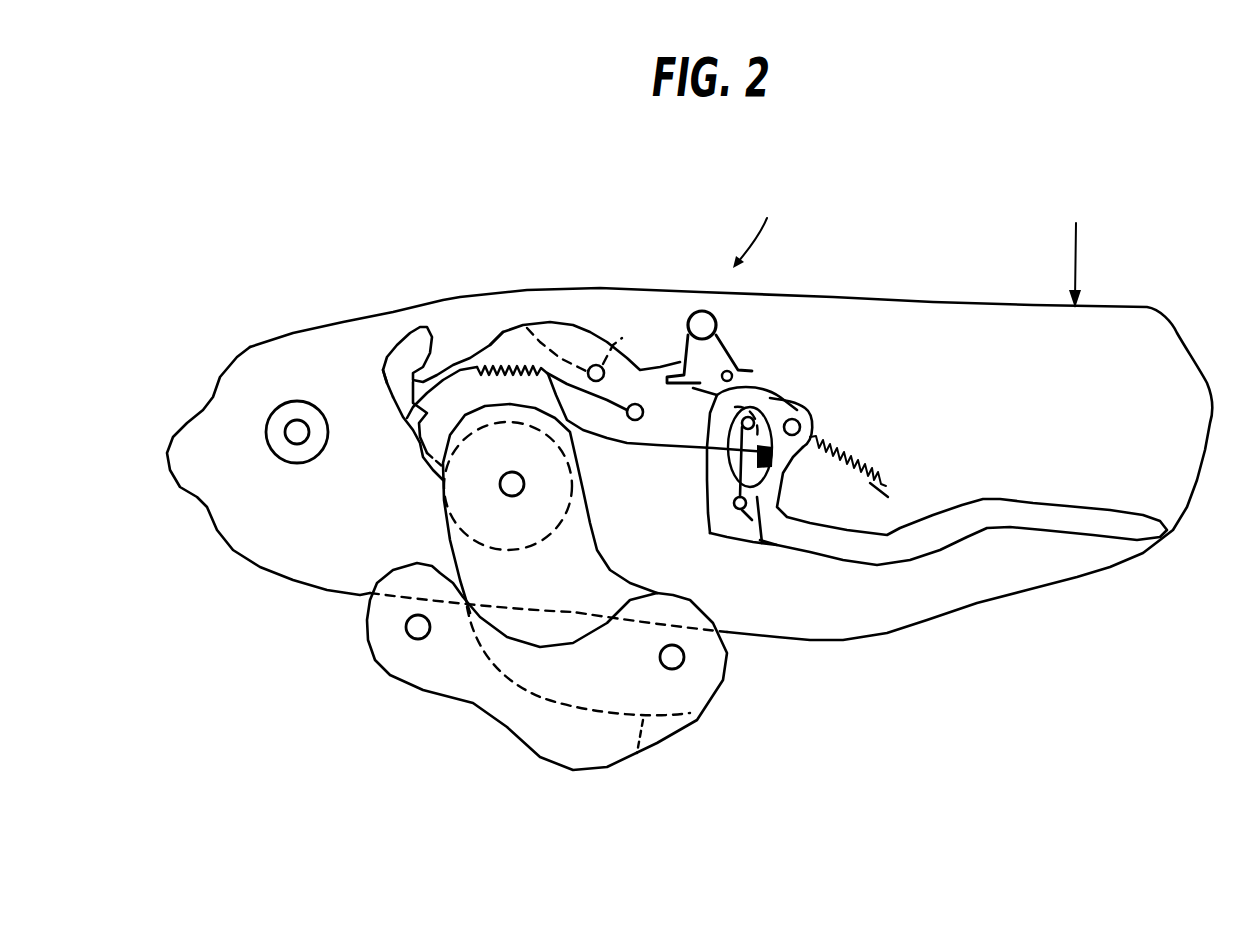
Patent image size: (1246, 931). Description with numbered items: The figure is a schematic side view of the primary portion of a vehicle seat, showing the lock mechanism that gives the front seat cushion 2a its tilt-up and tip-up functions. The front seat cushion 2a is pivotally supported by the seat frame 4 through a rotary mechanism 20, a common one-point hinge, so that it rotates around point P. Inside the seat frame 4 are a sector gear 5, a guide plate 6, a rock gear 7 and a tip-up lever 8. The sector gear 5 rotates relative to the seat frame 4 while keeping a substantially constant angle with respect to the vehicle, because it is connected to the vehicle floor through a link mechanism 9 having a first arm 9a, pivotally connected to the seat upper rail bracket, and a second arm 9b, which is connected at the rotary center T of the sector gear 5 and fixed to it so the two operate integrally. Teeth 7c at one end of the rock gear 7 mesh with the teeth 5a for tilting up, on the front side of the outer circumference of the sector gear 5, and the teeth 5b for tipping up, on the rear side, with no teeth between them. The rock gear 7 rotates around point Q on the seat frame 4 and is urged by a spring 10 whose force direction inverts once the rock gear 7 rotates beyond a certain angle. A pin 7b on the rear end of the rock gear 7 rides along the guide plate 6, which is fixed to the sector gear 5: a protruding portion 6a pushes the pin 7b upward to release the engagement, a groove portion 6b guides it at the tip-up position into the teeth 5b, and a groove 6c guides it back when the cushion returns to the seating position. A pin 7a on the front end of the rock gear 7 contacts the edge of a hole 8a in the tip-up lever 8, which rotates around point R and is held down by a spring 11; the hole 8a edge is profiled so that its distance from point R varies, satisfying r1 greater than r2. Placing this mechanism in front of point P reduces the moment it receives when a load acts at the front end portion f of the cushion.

The front seat cushion 2a is at (758, 232).
The seat frame 4 is at (823, 297).
The sector gear 5 is at (423, 470).
The teeth for tilting up 5a is at (507, 370).
The teeth for tipping up 5b is at (407, 418).
The guide plate 6 is at (462, 367).
The protruding portion 6a is at (527, 328).
The groove portion 6b is at (427, 323).
The groove 6c is at (599, 362).
The rock gear 7 is at (657, 445).
The pin 7a is at (760, 404).
The pin 7b is at (582, 360).
The teeth 7c is at (503, 330).
The tip-up lever 8 is at (1113, 512).
The hole 8a is at (793, 418).
The link mechanism 9 is at (588, 768).
The first arm 9a is at (523, 740).
The second arm 9b is at (637, 753).
The spring 10 is at (700, 310).
The spring 11 is at (840, 445).
The rotary mechanism 20 is at (293, 400).
The point P is at (288, 430).
The point Q is at (637, 423).
The point R is at (737, 513).
The rotary center T is at (516, 496).
The front end portion f is at (1075, 255).
The distance r1 is at (707, 453).
The distance r2 is at (760, 530).